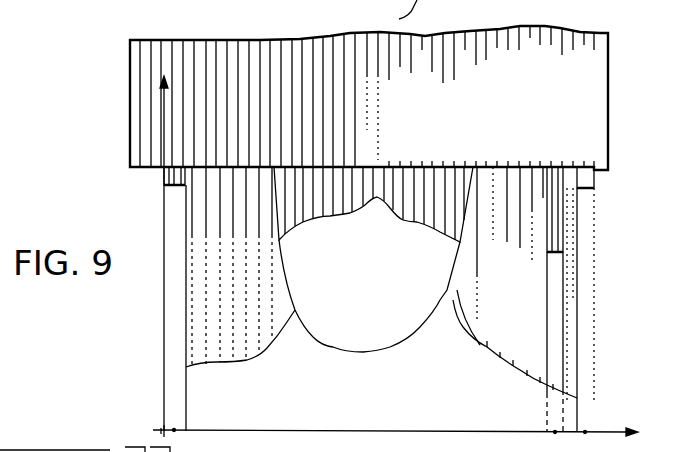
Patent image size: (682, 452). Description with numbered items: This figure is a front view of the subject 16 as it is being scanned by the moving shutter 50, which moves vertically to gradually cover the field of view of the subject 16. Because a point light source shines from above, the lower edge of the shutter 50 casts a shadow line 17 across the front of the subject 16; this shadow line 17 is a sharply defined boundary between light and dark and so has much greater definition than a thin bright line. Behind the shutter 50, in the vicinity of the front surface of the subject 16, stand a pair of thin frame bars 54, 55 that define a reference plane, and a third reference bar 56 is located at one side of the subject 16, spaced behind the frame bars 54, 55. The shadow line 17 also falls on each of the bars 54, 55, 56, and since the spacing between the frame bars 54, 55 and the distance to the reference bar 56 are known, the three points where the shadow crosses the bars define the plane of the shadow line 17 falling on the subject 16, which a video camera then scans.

The moving shutter 50 is at (280, 43).
The frame bar 54 is at (172, 339).
The shadow line 17 is at (334, 213).
The subject 16 is at (335, 347).
The reference bar 56 is at (548, 310).
The frame bar 55 is at (592, 311).